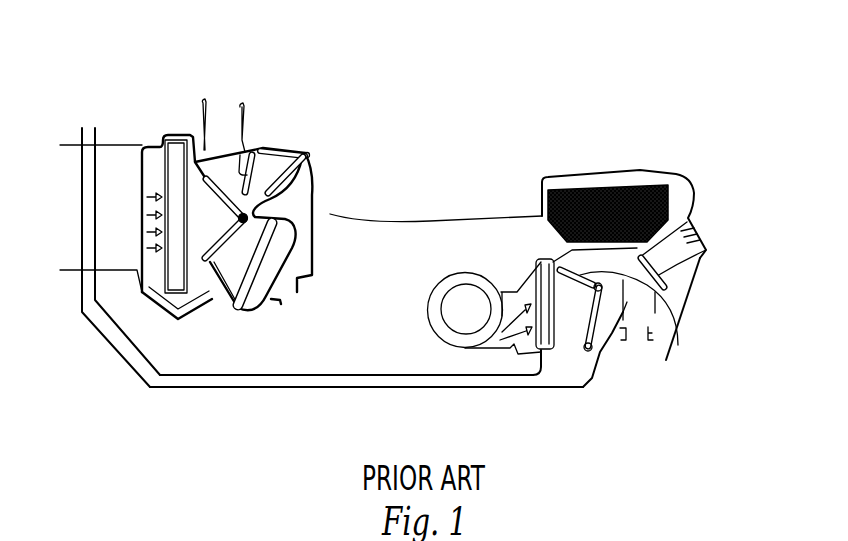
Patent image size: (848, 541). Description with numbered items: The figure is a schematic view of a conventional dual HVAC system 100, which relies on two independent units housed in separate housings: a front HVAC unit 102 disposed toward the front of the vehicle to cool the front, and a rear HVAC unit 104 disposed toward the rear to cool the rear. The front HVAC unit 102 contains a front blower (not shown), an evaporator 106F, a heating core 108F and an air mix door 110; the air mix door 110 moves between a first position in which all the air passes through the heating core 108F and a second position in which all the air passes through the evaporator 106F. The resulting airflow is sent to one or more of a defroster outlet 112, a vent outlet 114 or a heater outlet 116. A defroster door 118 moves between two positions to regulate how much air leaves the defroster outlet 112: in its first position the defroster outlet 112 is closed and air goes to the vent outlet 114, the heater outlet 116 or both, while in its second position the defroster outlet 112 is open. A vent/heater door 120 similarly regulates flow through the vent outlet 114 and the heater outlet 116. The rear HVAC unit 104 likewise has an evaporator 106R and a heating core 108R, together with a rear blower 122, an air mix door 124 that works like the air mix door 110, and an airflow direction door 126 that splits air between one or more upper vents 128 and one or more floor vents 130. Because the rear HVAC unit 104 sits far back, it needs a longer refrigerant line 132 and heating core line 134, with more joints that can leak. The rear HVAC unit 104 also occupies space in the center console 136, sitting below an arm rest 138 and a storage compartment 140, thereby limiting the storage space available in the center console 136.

The dual HVAC system 100 is at (575, 141).
The front HVAC unit 102 is at (128, 112).
The rear HVAC unit 104 is at (715, 197).
The evaporator 106F is at (173, 140).
The evaporator 106R is at (552, 350).
The heating core 108F is at (240, 288).
The heating core 108R is at (590, 332).
The air mix door 110 is at (228, 208).
The defroster outlet 112 is at (220, 92).
The vent outlet 114 is at (290, 146).
The heater outlet 116 is at (289, 299).
The defroster door 118 is at (256, 150).
The vent/heater door 120 is at (303, 180).
The rear blower 122 is at (455, 274).
The air mix door 124 is at (670, 306).
The airflow direction door 126 is at (668, 285).
The upper vents 128 is at (715, 233).
The floor vents 130 is at (648, 361).
The refrigerant line 132 is at (492, 376).
The heating core line 134 is at (320, 390).
The center console 136 is at (430, 221).
The arm rest 138 is at (652, 172).
The storage compartment 140 is at (583, 205).